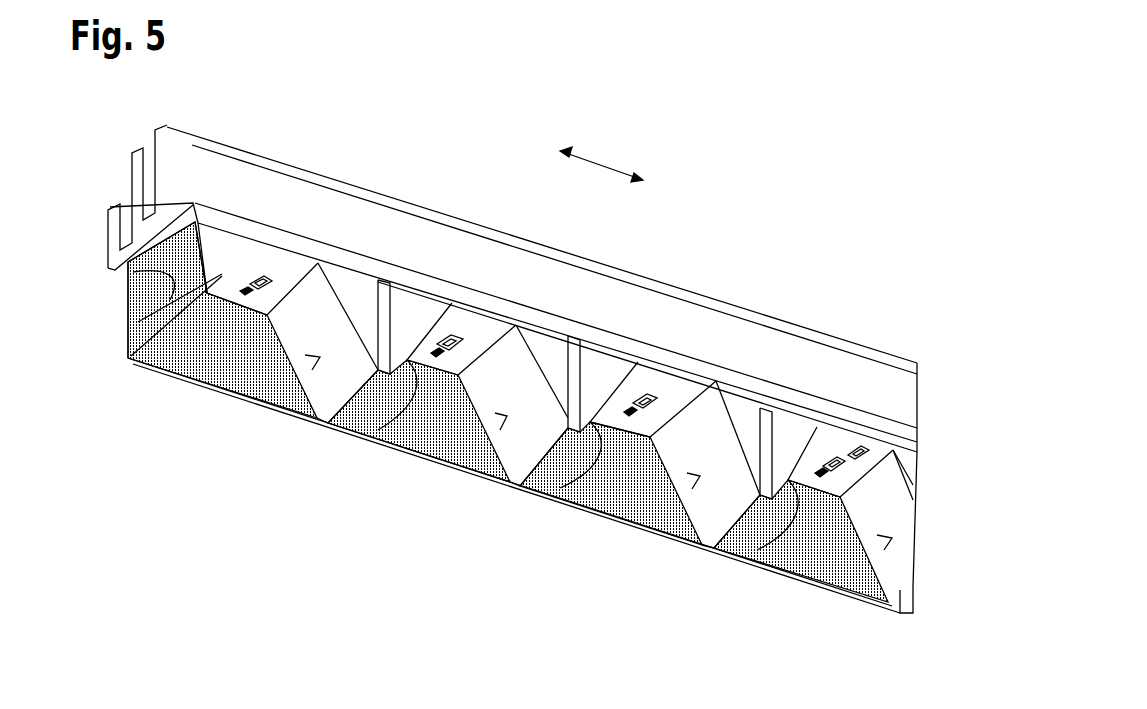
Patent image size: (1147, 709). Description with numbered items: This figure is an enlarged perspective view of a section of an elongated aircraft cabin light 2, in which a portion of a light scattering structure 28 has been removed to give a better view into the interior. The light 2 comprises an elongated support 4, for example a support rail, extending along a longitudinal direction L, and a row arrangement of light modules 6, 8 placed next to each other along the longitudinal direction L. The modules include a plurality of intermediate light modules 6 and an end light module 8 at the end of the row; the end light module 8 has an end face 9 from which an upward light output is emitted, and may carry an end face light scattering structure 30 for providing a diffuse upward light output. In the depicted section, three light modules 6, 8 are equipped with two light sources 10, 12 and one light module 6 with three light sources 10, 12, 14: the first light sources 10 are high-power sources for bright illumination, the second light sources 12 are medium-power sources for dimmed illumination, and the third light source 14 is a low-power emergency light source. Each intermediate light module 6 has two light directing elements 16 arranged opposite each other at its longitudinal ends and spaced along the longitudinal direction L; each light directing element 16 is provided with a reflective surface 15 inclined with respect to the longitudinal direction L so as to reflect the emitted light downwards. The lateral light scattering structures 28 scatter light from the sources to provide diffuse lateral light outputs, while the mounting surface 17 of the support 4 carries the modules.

The elongated aircraft cabin light 2 is at (750, 200).
The elongated support 4 is at (394, 226).
The intermediate light module 6 is at (380, 473).
The end light module 8 is at (190, 422).
The end face 9 is at (118, 307).
The first light source 10 is at (263, 278).
The second light source 12 is at (247, 286).
The third light source 14 is at (917, 425).
The reflective surface 15 is at (305, 418).
The light directing element 16 is at (353, 292).
The mounting surface 17 is at (221, 252).
The lateral light scattering structure 28 is at (232, 386).
The end face light scattering structure 30 is at (120, 364).
The longitudinal direction L is at (601, 159).